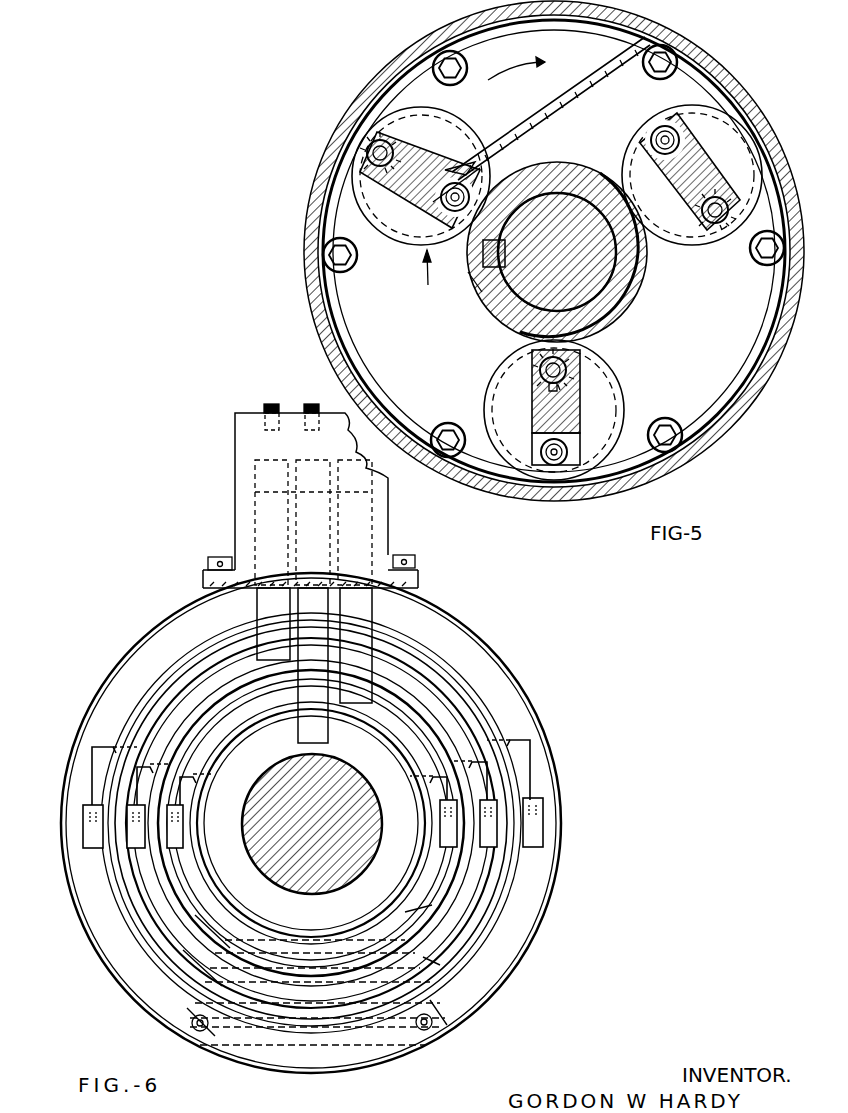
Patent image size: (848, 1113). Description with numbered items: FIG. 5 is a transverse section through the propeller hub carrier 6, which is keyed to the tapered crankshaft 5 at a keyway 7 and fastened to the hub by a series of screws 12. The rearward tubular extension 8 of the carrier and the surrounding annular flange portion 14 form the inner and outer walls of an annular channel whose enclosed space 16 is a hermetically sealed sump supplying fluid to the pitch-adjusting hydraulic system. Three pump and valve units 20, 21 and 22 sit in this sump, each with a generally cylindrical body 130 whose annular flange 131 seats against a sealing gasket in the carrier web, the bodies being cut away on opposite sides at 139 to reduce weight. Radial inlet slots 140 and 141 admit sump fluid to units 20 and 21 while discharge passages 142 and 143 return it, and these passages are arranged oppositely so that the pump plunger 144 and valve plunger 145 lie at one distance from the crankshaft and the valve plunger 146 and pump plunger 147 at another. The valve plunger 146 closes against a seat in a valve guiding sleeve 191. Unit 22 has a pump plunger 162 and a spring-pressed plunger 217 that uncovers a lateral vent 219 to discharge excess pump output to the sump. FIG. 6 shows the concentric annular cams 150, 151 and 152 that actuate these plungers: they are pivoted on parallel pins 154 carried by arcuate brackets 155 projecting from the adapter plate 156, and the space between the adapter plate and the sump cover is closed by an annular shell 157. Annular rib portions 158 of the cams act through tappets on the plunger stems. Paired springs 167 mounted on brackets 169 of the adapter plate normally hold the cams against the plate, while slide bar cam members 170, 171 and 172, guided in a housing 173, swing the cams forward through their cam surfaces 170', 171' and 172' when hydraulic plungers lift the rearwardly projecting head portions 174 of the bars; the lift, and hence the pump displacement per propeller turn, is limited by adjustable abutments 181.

In FIG. 5, the crankshaft 5 is at (598, 266).
In FIG. 6, the crankshaft 5 is at (372, 840).
In FIG. 5, the hub carrier 6 is at (493, 310).
In FIG. 5, the keyway 7 is at (478, 306).
In FIG. 5, the rearward tubular extension 8 is at (630, 300).
In FIG. 5, the screws 12 is at (672, 55).
In FIG. 5, the annular flange portion 14 is at (318, 230).
In FIG. 5, the annular space (sump) 16 is at (602, 143).
In FIG. 5, the pump and valve unit 20 is at (632, 386).
In FIG. 5, the pump and valve unit 21 is at (418, 267).
In FIG. 5, the pump and valve unit 22 is at (708, 100).
In FIG. 5, the body portion 130 is at (412, 232).
In FIG. 5, the annular flange 131 is at (672, 108).
In FIG. 5, the cut-away faces 139 is at (415, 134).
In FIG. 5, the inlet passage 140 is at (583, 462).
In FIG. 5, the inlet passage 141 is at (472, 182).
In FIG. 5, the discharge passage 142 is at (575, 332).
In FIG. 5, the discharge passage 143 is at (365, 150).
In FIG. 5, the pump plunger 144 is at (545, 458).
In FIG. 5, the valve plunger 145 is at (388, 152).
In FIG. 5, the valve plunger 146 is at (540, 366).
In FIG. 5, the pump plunger 147 is at (460, 170).
In FIG. 6, the operating cam 150 is at (405, 683).
In FIG. 6, the annular cam 151 is at (416, 742).
In FIG. 6, the annular cam 152 is at (432, 658).
In FIG. 6, the pivot pins 154 is at (440, 934).
In FIG. 6, the arcuate brackets 155 is at (232, 930).
In FIG. 6, the adapter plate 156 is at (122, 942).
In FIG. 6, the annular shell 157 is at (560, 800).
In FIG. 6, the annular rib portions 158 is at (468, 883).
In FIG. 5, the pump plunger 162 is at (650, 128).
In FIG. 6, the paired springs 167 is at (140, 760).
In FIG. 6, the brackets 169 is at (86, 838).
In FIG. 6, the slide bar cam member 170 is at (242, 624).
In FIG. 6, the cam surface 170' is at (239, 670).
In FIG. 6, the slide bar cam member 171 is at (318, 665).
In FIG. 6, the cam surface 171' is at (274, 753).
In FIG. 6, the slide bar cam member 172 is at (379, 645).
In FIG. 6, the cam surface 172' is at (357, 750).
In FIG. 6, the housing 173 is at (240, 487).
In FIG. 6, the head portions 174 is at (300, 498).
In FIG. 6, the abutments 181 is at (310, 404).
In FIG. 5, the valve guiding sleeve 191 is at (368, 165).
In FIG. 5, the spring pressed plunger 217 is at (712, 222).
In FIG. 5, the vent 219 is at (741, 245).